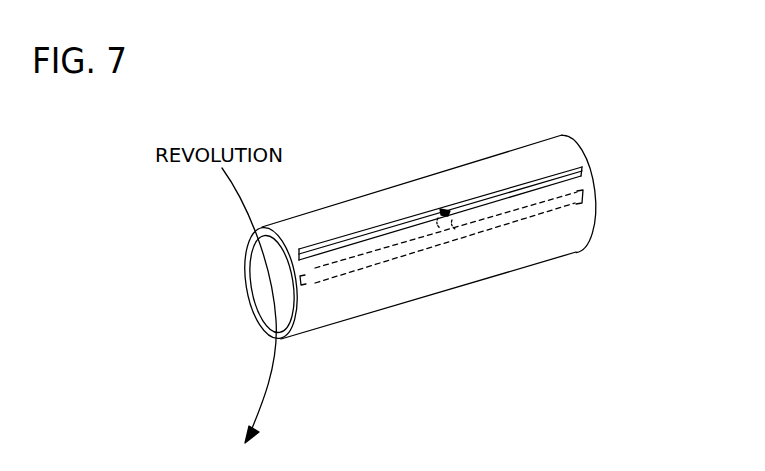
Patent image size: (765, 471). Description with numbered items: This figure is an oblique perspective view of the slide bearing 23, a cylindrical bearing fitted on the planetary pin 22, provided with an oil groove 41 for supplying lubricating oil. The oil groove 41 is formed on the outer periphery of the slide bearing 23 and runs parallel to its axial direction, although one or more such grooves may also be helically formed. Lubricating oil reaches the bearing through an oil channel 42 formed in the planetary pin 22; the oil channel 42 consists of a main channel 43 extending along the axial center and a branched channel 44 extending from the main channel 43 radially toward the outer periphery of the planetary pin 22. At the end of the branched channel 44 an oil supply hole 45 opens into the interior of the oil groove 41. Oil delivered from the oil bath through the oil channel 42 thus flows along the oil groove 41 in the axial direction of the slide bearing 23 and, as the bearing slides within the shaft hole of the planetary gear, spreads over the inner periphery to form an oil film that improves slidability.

The planetary pin 22 is at (267, 281).
The slide bearing 23 is at (370, 191).
The oil groove 41 is at (533, 178).
The oil channel 42 is at (441, 289).
The main channel 43 is at (462, 234).
The branched channel 44 is at (440, 235).
The oil supply hole 45 is at (445, 210).